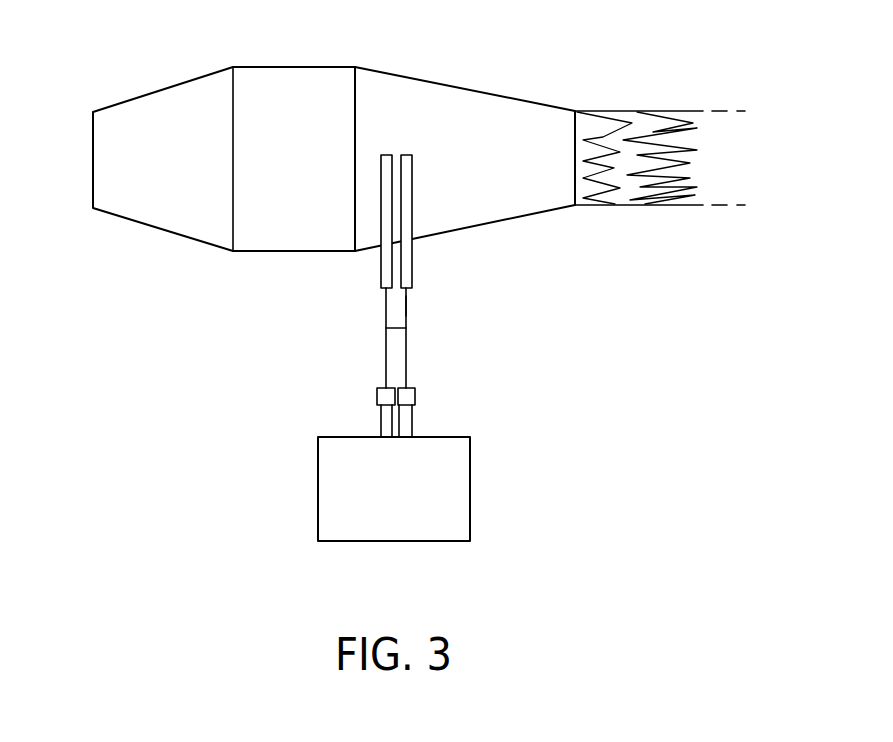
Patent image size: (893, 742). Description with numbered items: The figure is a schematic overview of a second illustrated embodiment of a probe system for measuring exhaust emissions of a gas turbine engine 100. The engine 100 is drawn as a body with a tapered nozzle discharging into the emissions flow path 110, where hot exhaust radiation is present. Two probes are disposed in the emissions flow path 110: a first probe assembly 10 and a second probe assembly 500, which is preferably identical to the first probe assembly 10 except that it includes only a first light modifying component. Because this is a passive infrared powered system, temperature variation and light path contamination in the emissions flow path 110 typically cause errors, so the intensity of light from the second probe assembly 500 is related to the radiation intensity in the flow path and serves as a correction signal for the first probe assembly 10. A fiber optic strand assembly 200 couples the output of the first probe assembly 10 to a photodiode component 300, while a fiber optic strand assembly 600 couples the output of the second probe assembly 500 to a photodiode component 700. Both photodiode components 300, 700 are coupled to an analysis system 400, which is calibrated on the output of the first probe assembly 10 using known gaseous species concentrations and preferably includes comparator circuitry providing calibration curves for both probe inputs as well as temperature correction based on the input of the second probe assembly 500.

The gas turbine engine 100 is at (146, 257).
The emissions flow path 110 is at (453, 107).
The first probe assembly 10 is at (380, 272).
The second probe assembly 500 is at (412, 265).
The fiber optic strand assembly 600 is at (407, 305).
The fiber optic strand assembly 200 is at (407, 330).
The photodiode component 700 is at (377, 400).
The photodiode component 300 is at (415, 393).
The analysis system 400 is at (412, 499).